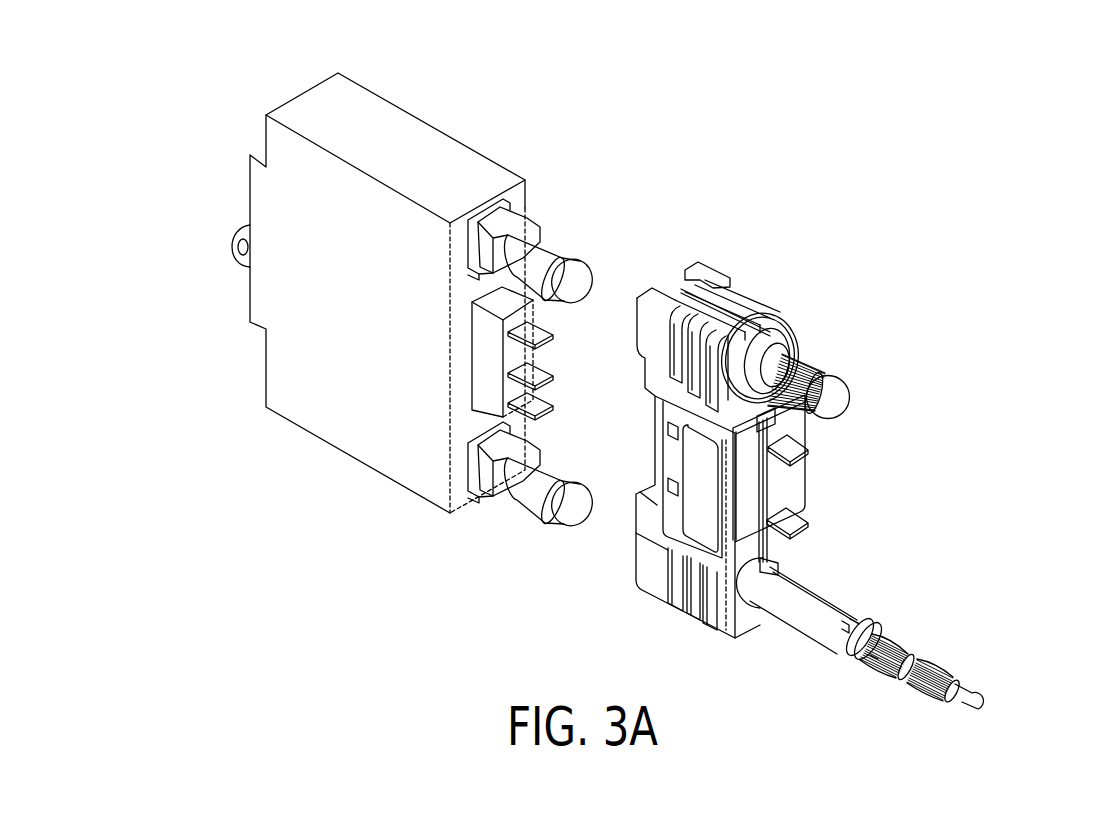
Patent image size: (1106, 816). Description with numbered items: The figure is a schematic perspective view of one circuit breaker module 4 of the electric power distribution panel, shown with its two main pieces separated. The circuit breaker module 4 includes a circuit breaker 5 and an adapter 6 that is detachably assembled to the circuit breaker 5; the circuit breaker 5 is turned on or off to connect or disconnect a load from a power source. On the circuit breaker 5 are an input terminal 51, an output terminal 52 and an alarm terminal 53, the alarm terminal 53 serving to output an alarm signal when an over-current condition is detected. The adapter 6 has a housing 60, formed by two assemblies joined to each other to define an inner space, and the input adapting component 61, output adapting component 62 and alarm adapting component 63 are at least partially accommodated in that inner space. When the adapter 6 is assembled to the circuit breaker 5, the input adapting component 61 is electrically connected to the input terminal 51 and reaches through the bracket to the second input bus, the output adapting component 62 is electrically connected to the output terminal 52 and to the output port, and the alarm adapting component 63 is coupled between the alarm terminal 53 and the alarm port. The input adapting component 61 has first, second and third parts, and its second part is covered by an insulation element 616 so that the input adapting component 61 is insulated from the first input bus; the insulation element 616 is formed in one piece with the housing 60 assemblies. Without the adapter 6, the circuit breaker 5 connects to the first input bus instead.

The circuit breaker module 4 is at (1075, 120).
The circuit breaker 5 is at (467, 118).
The input terminal 51 is at (537, 492).
The output terminal 52 is at (537, 252).
The alarm terminal 53 is at (537, 337).
The adapter 6 is at (742, 256).
The housing 60 is at (770, 317).
The input adapting component 61 is at (913, 657).
The output adapting component 62 is at (837, 400).
The alarm adapting component 63 is at (790, 450).
The insulation element 616 is at (830, 620).